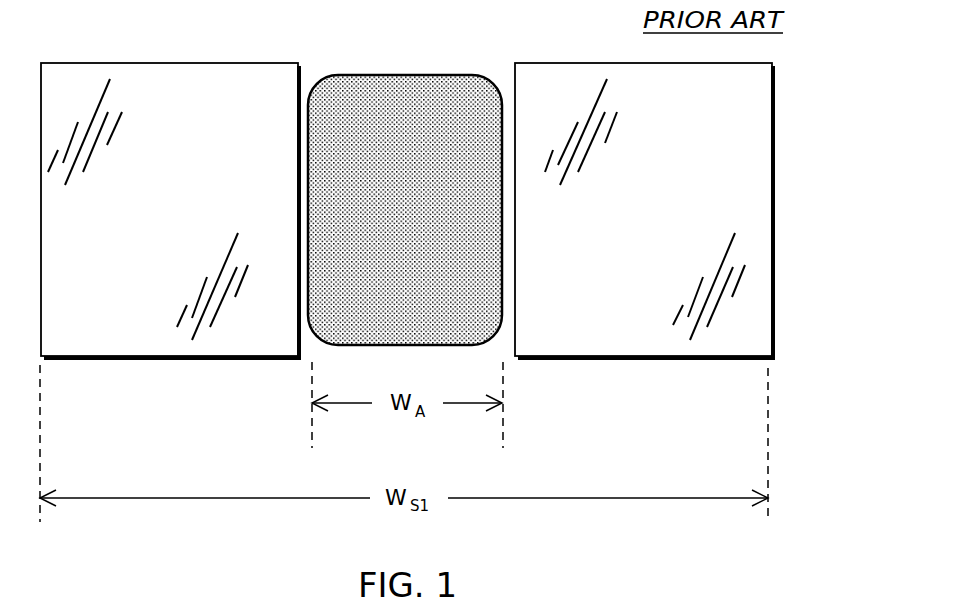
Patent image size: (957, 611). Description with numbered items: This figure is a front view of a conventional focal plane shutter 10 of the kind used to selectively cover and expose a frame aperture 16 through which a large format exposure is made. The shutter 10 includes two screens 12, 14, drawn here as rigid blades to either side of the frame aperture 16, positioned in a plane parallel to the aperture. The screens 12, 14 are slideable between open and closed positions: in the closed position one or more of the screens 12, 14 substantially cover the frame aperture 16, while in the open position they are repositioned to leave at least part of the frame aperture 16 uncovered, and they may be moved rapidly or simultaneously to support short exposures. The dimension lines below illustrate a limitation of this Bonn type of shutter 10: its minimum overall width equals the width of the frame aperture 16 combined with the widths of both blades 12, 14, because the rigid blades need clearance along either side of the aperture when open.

The focal plane shutter 10 is at (806, 178).
The screen 12 is at (173, 225).
The screen 14 is at (662, 225).
The frame aperture 16 is at (393, 75).